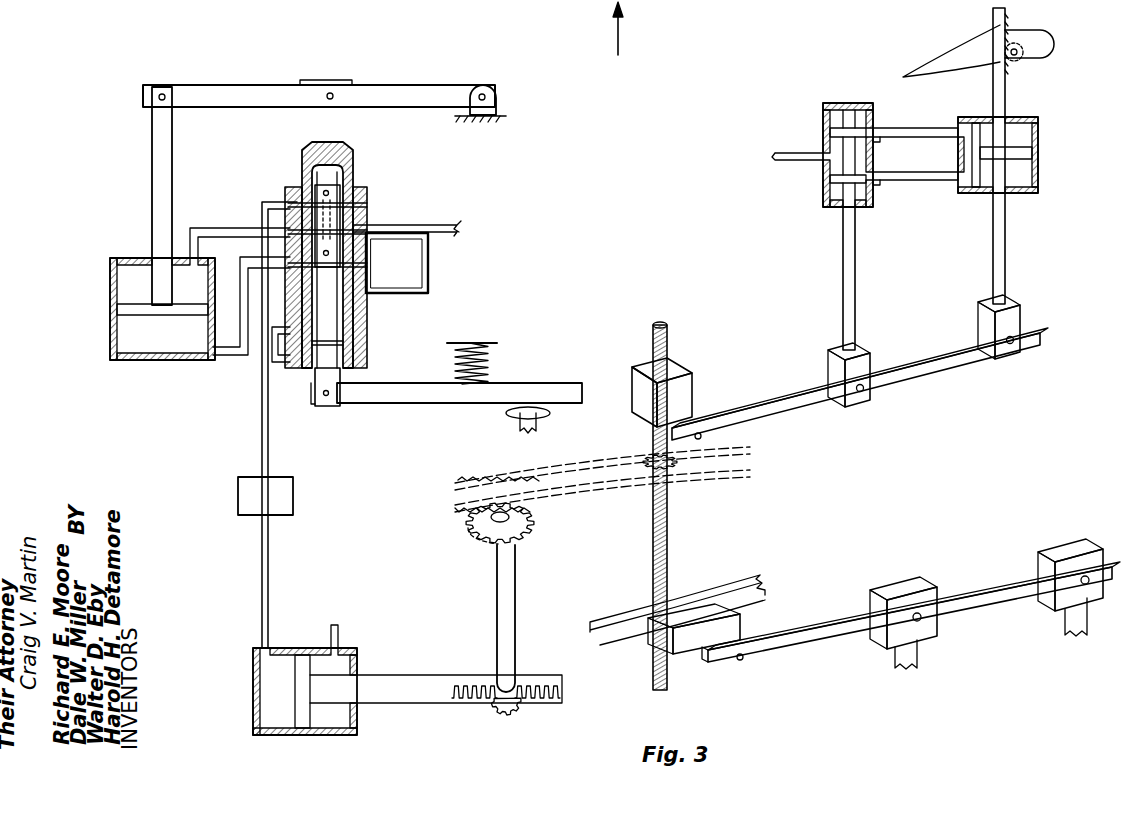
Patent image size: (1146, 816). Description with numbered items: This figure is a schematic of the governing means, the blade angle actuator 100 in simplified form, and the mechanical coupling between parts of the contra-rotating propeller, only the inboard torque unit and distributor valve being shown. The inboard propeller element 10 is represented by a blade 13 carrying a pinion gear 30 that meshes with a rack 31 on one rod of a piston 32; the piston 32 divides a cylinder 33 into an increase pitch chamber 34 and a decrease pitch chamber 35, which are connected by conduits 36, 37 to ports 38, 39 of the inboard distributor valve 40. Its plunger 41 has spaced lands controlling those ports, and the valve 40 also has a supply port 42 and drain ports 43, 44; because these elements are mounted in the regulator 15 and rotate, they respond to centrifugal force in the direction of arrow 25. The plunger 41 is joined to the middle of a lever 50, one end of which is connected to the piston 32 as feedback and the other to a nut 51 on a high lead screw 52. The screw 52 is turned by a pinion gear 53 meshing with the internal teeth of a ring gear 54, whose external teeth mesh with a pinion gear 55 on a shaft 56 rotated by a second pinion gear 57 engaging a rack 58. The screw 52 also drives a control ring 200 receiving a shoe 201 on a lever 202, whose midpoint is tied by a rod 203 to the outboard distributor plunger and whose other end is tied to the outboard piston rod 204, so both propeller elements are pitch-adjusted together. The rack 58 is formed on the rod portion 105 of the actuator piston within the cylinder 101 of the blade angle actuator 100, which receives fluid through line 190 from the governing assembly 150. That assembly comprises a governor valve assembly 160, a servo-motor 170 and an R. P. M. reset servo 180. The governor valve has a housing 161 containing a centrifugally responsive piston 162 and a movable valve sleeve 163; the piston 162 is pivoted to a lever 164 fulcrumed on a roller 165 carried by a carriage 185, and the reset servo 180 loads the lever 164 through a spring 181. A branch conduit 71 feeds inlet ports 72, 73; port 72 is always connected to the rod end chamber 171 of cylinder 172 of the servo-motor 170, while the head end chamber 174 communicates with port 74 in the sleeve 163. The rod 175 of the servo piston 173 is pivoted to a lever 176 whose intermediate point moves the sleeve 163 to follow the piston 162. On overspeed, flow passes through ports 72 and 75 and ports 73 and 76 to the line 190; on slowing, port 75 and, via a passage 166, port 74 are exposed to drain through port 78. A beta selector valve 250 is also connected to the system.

The inboard propeller element 10 is at (1085, 91).
The propeller blade 13 is at (1056, 53).
The regulator 15 is at (814, 133).
The arrow 25 is at (616, 25).
The pinion gear 30 is at (1022, 60).
The rack 31 is at (992, 26).
The piston 32 is at (975, 148).
The cylinder 33 is at (1030, 152).
The increase pitch chamber 34 is at (1024, 141).
The decrease pitch chamber 35 is at (1025, 178).
The conduit 36 is at (915, 122).
The conduit 37 is at (915, 203).
The port 38 is at (881, 138).
The port 39 is at (880, 185).
The distributor valve 40 is at (820, 142).
The plunger 41 is at (836, 128).
The supply port 42 is at (820, 162).
The drain port 43 is at (850, 105).
The drain port 44 is at (840, 206).
The lever 50 is at (918, 380).
The nut 51 is at (678, 382).
The high lead screw 52 is at (696, 487).
The pinion gear 53 is at (680, 462).
The ring gear 54 is at (742, 475).
The pinion gear 55 is at (528, 527).
The shaft 56 is at (512, 602).
The second pinion gear 57 is at (512, 710).
The rack 58 is at (535, 680).
The branch conduit 71 is at (440, 230).
The inlet port 72 is at (362, 231).
The inlet port 73 is at (362, 298).
The port 74 is at (290, 262).
The port 75 is at (288, 205).
The port 76 is at (286, 330).
The port 78 is at (350, 152).
The blade angle actuator 100 is at (264, 685).
The cylinder 101 is at (252, 713).
The rod portion 105 is at (436, 663).
The governing assembly 150 is at (479, 273).
The governor valve assembly 160 is at (338, 260).
The housing 161 is at (348, 244).
The centrifugally responsive piston element 162 is at (330, 377).
The movable valve sleeve 163 is at (356, 172).
The lever 164 is at (433, 403).
The roller 165 is at (548, 408).
The passage 166 is at (368, 202).
The servo-motor 170 is at (131, 340).
The rod end chamber 171 is at (128, 270).
The cylinder 172 is at (142, 362).
The piston 173 is at (128, 313).
The head end chamber 174 is at (133, 337).
The rod 175 is at (157, 160).
The lever 176 is at (246, 88).
The R. P. M. reset servo 180 is at (509, 340).
The spring 181 is at (486, 361).
The carriage 185 is at (539, 434).
The line 190 is at (261, 455).
The control ring 200 is at (712, 600).
The shoe 201 is at (735, 630).
The lever 202 is at (765, 655).
The rod 203 is at (913, 660).
The piston rod 204 is at (1082, 633).
The beta selector valve 250 is at (238, 514).